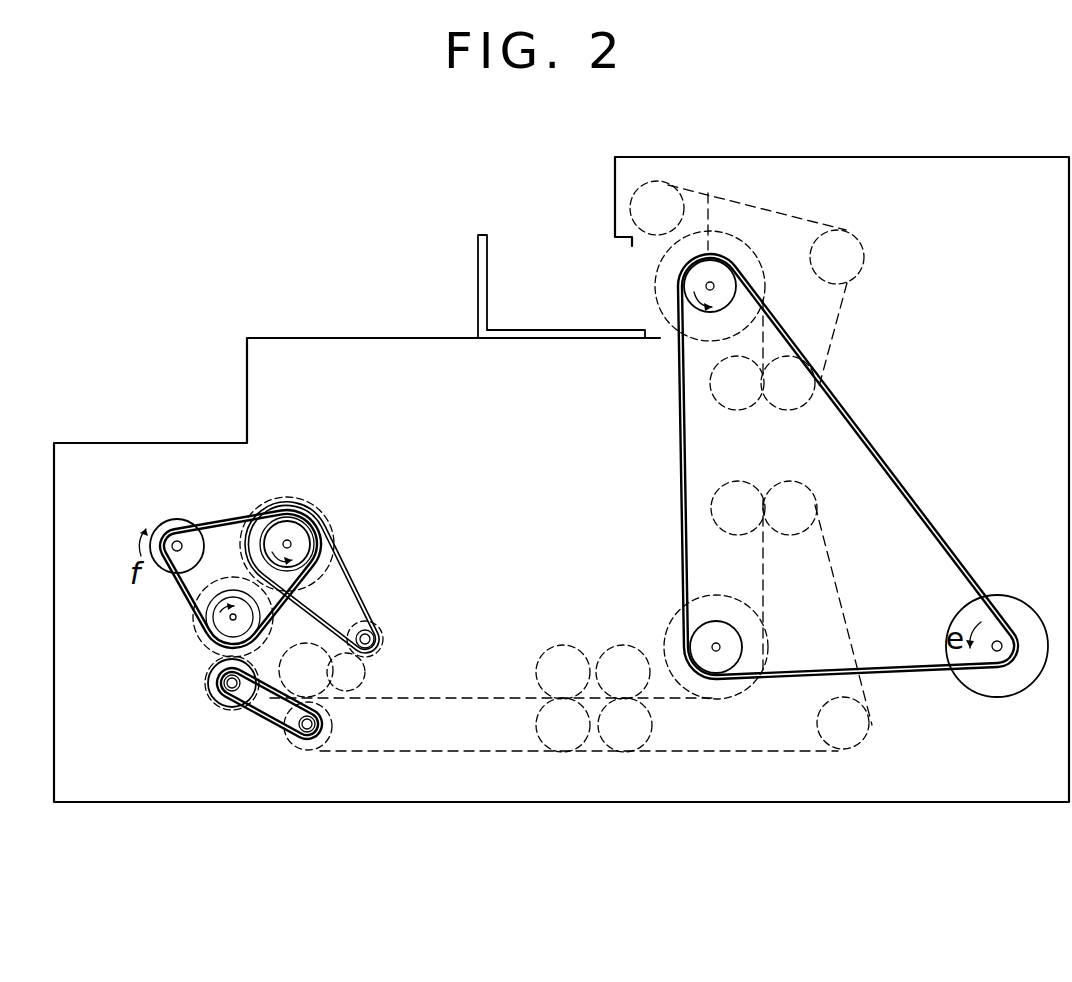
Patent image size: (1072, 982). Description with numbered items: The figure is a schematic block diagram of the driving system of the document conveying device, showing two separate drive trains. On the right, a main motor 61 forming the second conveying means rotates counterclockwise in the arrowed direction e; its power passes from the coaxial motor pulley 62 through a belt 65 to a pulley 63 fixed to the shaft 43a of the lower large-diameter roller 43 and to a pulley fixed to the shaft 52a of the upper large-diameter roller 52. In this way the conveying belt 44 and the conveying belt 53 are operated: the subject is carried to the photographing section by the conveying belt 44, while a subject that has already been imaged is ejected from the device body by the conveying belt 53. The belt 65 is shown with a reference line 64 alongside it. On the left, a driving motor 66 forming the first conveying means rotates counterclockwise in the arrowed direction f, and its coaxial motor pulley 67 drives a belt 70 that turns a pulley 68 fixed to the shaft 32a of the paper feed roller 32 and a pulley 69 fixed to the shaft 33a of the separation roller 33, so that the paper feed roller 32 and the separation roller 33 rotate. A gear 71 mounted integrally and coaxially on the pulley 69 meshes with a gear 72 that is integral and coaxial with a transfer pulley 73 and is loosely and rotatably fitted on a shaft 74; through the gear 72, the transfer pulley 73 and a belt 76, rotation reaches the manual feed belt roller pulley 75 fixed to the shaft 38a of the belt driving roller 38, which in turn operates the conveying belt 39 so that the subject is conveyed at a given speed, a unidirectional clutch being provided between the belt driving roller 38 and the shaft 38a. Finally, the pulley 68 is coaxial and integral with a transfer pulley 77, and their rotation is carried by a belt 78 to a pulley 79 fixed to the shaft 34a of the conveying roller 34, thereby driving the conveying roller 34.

The paper feed roller 32 is at (275, 497).
The shaft of paper feed roller 32a is at (294, 541).
The separation roller 33 is at (212, 650).
The shaft of separation roller 33a is at (236, 608).
The conveying roller 34 is at (377, 657).
The shaft of conveying roller 34a is at (384, 641).
The belt driving roller 38 is at (338, 744).
The shaft of belt driving roller 38a is at (323, 722).
The conveying belt 39 is at (517, 698).
The lower large-diameter roller 43 is at (673, 688).
The shaft of lower large-diameter roller 43a is at (748, 653).
The conveying belt 44 is at (805, 751).
The upper large-diameter roller 52 is at (708, 210).
The shaft of upper large-diameter roller 52a is at (690, 267).
The conveying belt 53 is at (815, 222).
The main motor 61 is at (1023, 683).
The motor pulley 62 is at (982, 667).
The pulley 63 is at (720, 672).
The timing belt 64 is at (733, 265).
The belt 65 is at (832, 396).
The driving motor 66 is at (160, 523).
The motor pulley 67 is at (172, 524).
The pulley 68 is at (311, 519).
The pulley 69 is at (214, 694).
The belt 70 is at (204, 618).
The gear 71 is at (208, 630).
The gear 72 is at (236, 706).
The transfer pulley 73 is at (266, 720).
The shaft 74 is at (229, 694).
The manual feed belt roller pulley 75 is at (337, 738).
The belt 76 is at (303, 740).
The transfer pulley 77 is at (264, 514).
The belt 78 is at (350, 578).
The pulley 79 is at (373, 628).